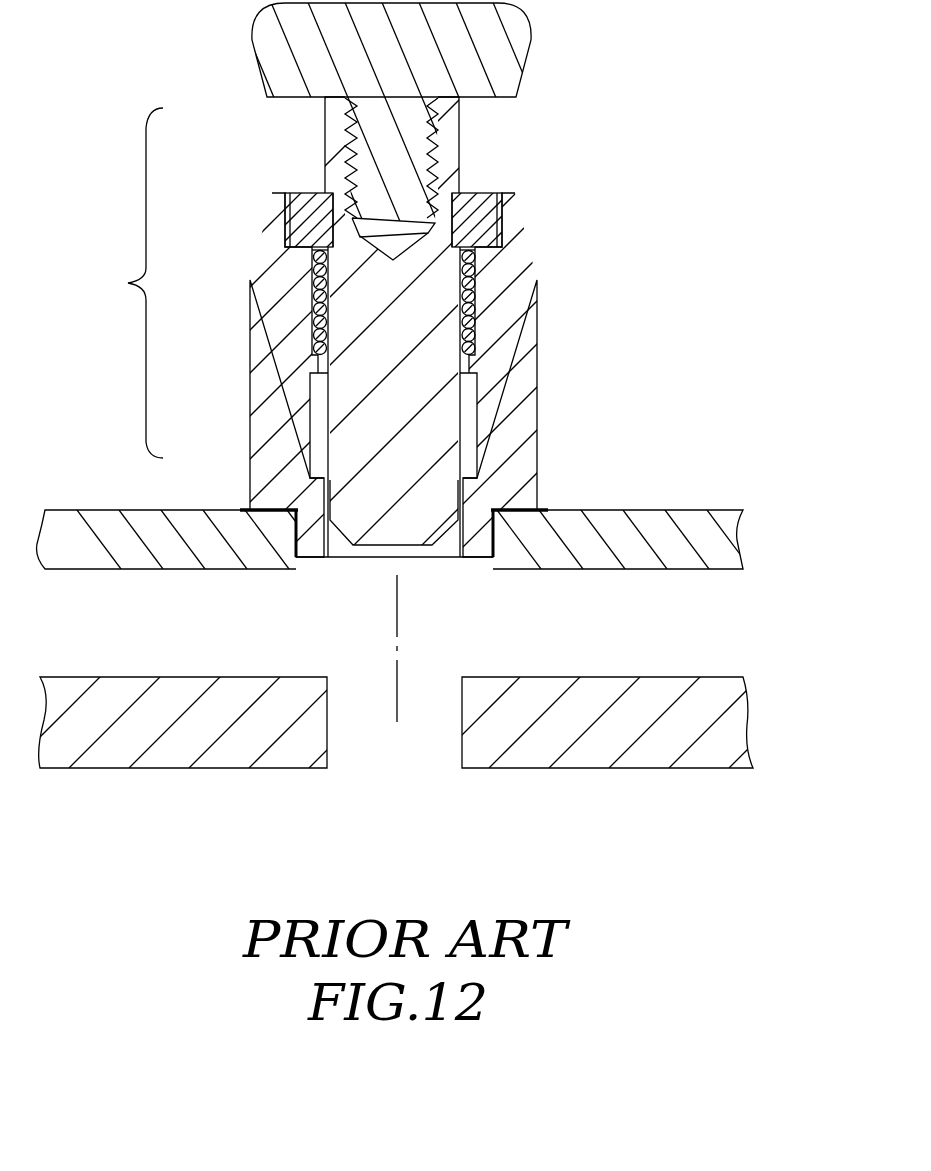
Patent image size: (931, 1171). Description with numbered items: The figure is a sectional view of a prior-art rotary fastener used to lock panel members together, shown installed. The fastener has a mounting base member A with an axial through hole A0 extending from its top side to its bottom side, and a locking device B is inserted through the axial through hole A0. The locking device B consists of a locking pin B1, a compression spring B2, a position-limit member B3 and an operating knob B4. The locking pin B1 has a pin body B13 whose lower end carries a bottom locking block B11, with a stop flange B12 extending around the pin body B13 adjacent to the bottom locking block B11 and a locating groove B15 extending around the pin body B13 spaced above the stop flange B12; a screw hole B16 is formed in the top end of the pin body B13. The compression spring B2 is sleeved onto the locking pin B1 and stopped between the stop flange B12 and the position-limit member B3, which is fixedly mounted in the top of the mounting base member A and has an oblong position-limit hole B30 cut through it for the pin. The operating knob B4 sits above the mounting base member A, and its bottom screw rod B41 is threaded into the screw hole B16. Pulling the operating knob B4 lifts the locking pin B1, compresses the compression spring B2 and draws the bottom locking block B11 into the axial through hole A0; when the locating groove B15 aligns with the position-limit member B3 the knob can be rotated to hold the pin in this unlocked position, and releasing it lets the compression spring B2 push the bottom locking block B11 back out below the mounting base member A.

The mounting base member A is at (523, 367).
The axial through hole A0 is at (478, 320).
The locking device B is at (133, 283).
The locking pin B1 is at (512, 194).
The bottom locking block B11 is at (378, 540).
The stop flange B12 is at (308, 364).
The pin body B13 is at (336, 128).
The locating groove B15 is at (313, 254).
The screw hole B16 is at (395, 232).
The compression spring B2 is at (317, 349).
The position-limit member B3 is at (483, 216).
The oblong position-limit hole B30 is at (292, 210).
The operating knob B4 is at (518, 57).
The bottom screw rod B41 is at (382, 176).